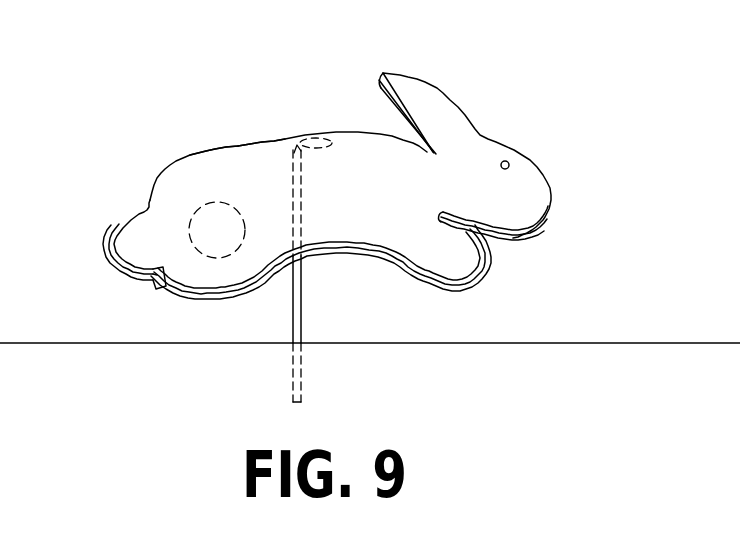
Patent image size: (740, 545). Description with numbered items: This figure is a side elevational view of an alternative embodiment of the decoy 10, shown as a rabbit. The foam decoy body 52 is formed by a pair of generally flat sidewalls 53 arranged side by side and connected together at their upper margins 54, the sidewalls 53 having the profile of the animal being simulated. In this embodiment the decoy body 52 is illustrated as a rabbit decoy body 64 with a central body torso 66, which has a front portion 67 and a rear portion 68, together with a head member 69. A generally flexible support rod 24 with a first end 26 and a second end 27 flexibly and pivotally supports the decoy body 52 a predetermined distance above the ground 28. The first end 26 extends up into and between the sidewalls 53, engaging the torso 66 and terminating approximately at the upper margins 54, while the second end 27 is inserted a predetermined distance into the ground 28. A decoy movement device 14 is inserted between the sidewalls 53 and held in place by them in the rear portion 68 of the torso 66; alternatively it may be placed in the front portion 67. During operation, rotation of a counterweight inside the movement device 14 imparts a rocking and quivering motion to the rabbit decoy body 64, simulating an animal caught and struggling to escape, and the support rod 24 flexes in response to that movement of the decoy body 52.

The decoy 10 is at (143, 82).
The decoy movement device 14 is at (190, 213).
The flexible support rod 24 is at (301, 317).
The first end 26 is at (328, 137).
The second end 27 is at (301, 383).
The ground 28 is at (552, 342).
The foam decoy body 52 is at (206, 134).
The sidewalls 53 is at (187, 267).
The upper margins 54 is at (246, 142).
The rabbit decoy body 64 is at (305, 137).
The central body torso 66 is at (322, 200).
The front portion 67 is at (395, 208).
The rear portion 68 is at (183, 188).
The head member 69 is at (533, 197).